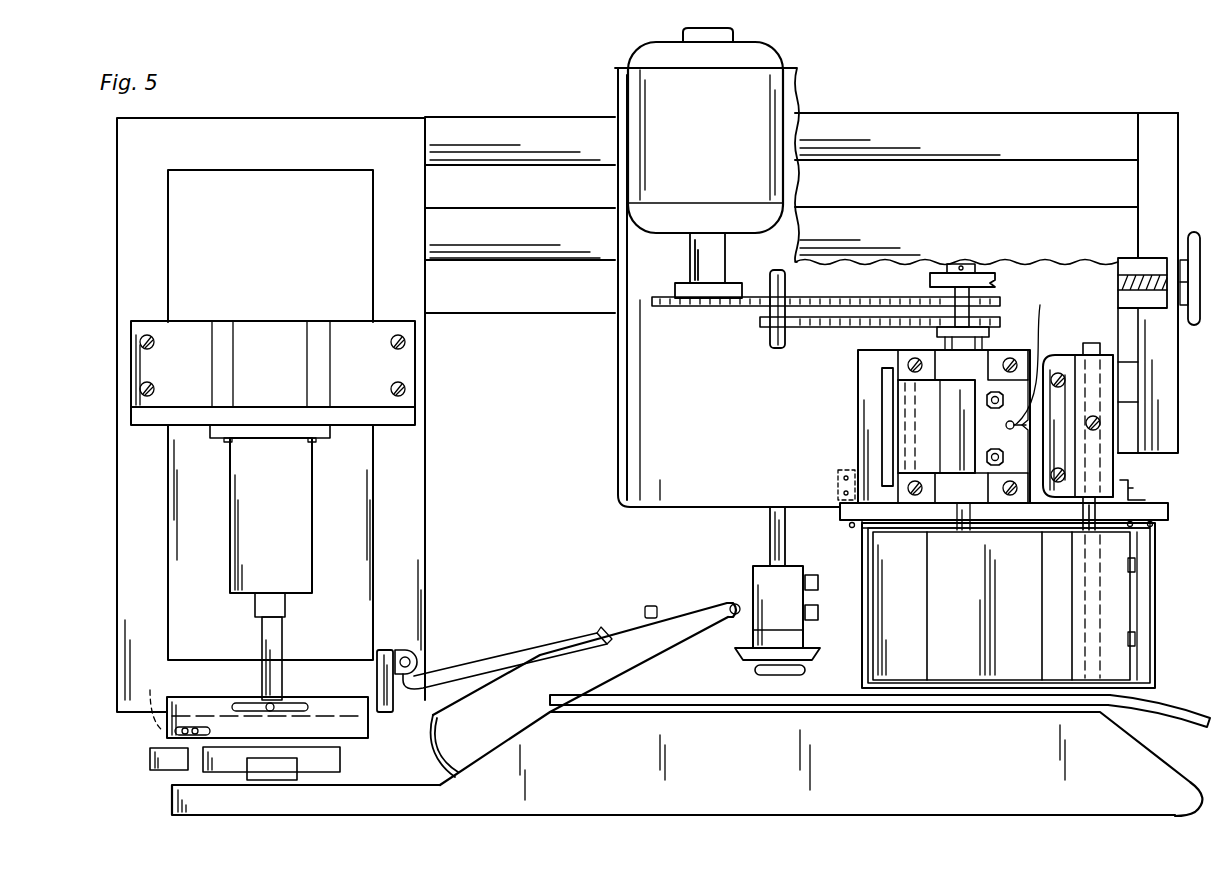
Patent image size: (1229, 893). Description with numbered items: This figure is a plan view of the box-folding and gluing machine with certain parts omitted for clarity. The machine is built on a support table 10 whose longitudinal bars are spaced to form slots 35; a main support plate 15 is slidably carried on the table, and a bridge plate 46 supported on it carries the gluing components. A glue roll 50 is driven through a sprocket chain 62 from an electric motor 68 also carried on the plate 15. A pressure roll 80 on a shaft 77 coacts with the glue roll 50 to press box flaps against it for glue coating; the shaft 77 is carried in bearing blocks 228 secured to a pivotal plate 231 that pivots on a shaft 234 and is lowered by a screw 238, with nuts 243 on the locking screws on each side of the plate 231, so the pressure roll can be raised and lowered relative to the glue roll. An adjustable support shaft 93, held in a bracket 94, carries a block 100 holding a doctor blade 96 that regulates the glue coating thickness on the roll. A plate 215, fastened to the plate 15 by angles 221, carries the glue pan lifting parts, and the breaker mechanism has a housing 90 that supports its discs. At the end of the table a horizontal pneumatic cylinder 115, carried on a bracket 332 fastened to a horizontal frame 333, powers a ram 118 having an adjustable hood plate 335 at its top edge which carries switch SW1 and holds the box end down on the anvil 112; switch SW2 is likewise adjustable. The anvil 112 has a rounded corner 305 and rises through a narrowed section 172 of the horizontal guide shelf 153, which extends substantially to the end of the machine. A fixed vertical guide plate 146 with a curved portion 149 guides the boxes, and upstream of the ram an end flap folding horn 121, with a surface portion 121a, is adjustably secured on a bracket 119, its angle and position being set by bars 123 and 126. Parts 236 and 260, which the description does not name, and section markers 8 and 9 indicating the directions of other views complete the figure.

The support table 10 is at (995, 98).
The horizontal frame 333 is at (178, 281).
The bracket 332 is at (314, 335).
The horizontal pneumatic cylinder 115 is at (275, 512).
The ram 118 is at (343, 703).
The hood plate 335 is at (221, 704).
The switch SW1 is at (169, 700).
The switch SW2 is at (168, 770).
The anvil 112 is at (318, 772).
The rounded corner 305 is at (345, 770).
The narrowed section 172 is at (348, 800).
The bracket 119 is at (398, 692).
The bar 126 is at (412, 655).
The bar 123 is at (478, 668).
The end flap folding horn 121 is at (683, 650).
The cam surface 121a is at (486, 737).
The slots 35 is at (952, 194).
The main support plate 15 is at (698, 456).
The electric motor 68 is at (716, 139).
The sprocket chain 62 is at (883, 298).
The rack 260 is at (760, 322).
The bearing blocks 228 is at (978, 376).
The bridge plate 46 is at (872, 358).
The pivotal plate 231 is at (930, 421).
The shaft 234 is at (910, 396).
The bar 236 is at (890, 470).
The nuts 243 is at (995, 392).
The screw 238 is at (1040, 352).
The shaft 77 is at (961, 501).
The section line 9 is at (868, 462).
The angles 221 is at (838, 494).
The support shaft 93 is at (1090, 343).
The bracket 94 is at (1105, 475).
The plate 215 is at (1165, 520).
The housing 90 is at (746, 578).
The section line 8 is at (890, 628).
The glue roll 50 is at (918, 659).
The pressure roll 80 is at (968, 591).
The doctor blade 96 is at (1065, 591).
The block 100 is at (1117, 665).
The vertical guide plate 146 is at (930, 705).
The curved portion 149 is at (1170, 716).
The horizontal guide shelf 153 is at (893, 782).